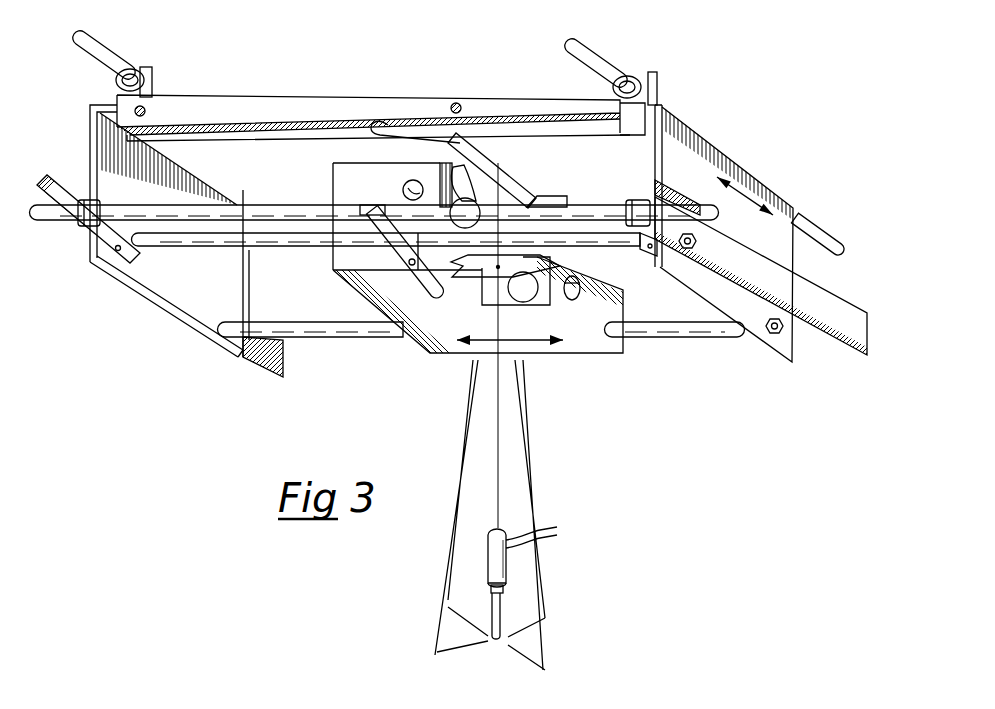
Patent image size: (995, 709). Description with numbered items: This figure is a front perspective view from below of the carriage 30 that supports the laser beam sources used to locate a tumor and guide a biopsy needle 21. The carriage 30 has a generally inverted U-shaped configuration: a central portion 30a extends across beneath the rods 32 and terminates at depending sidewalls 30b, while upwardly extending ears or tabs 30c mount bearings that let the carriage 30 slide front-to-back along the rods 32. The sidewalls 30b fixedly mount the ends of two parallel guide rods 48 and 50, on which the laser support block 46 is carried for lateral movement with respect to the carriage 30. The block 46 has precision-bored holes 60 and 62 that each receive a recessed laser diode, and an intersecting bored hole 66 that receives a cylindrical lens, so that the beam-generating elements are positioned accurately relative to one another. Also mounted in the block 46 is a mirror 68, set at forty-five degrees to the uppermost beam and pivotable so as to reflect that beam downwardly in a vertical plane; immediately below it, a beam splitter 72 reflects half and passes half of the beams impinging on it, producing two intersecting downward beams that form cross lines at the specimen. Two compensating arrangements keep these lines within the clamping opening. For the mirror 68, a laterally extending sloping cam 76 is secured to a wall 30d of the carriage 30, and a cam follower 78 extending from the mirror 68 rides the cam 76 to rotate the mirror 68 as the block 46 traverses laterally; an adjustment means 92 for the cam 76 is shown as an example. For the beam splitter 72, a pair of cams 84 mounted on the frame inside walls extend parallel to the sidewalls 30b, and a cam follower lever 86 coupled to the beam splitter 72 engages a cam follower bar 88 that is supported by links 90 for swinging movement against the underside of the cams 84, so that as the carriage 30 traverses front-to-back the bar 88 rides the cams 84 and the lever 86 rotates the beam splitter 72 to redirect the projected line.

The biopsy needle 21 is at (507, 565).
The carriage 30 is at (690, 135).
The central portion 30a is at (181, 159).
The sidewalls 30b is at (193, 279).
The ears or tabs 30c is at (150, 68).
The wall 30d is at (602, 136).
The rods 32 is at (104, 48).
The laser support block 46 is at (585, 343).
The guide rod 48 is at (680, 338).
The guide rod 50 is at (253, 247).
The bored hole 60 is at (404, 191).
The bored hole 62 is at (523, 294).
The bored hole 66 is at (578, 280).
The mirror 68 is at (498, 172).
The beam splitter 72 is at (452, 284).
The sloping cam 76 is at (283, 99).
The cam follower 78 is at (393, 125).
The cams 84 is at (57, 175).
The cam follower lever 86 is at (375, 232).
The cam follower bar 88 is at (181, 206).
The links 90 is at (82, 228).
The adjustment means 92 is at (148, 108).